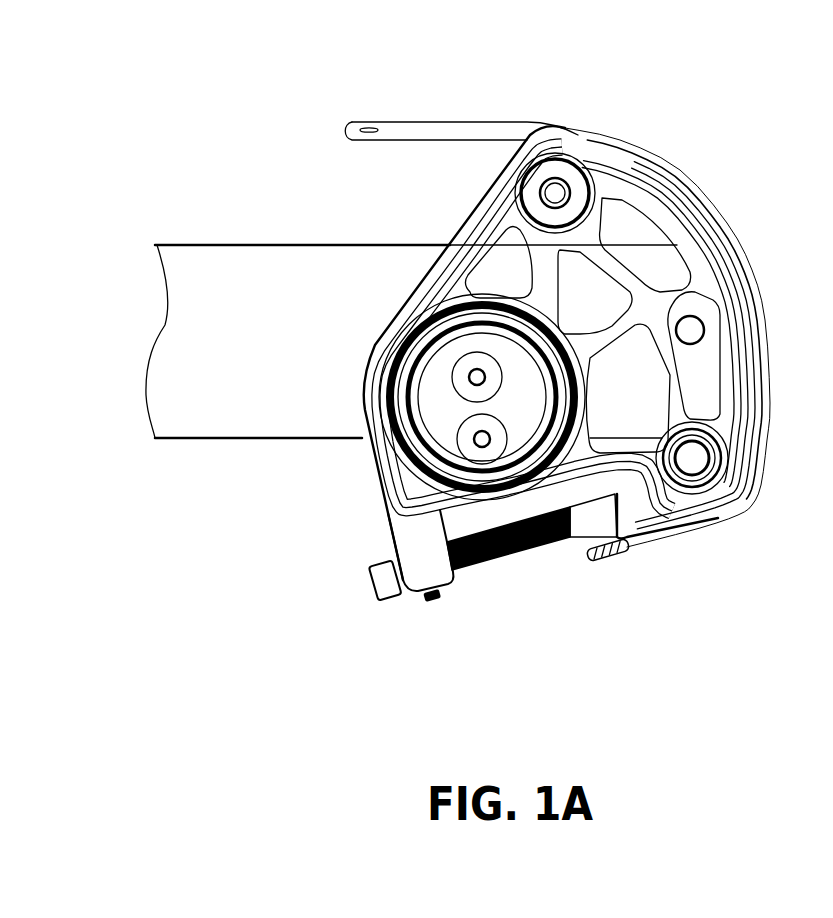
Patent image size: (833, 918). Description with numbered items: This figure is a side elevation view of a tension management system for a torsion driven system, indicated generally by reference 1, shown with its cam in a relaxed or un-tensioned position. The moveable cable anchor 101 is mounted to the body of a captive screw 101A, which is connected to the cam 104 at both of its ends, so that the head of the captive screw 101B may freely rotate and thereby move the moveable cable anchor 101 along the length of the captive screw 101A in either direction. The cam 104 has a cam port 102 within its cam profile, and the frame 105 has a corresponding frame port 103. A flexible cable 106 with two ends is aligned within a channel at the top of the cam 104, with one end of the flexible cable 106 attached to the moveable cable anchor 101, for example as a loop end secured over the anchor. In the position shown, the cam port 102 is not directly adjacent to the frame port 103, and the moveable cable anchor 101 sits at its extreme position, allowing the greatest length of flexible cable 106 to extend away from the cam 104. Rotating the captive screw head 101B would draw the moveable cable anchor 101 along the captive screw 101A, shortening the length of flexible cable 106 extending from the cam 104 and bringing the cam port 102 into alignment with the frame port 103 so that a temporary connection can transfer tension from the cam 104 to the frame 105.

The mounting assembly 1 is at (768, 55).
The moveable cable anchor 101 is at (568, 548).
The captive screw body 101A is at (507, 558).
The captive screw head 101B is at (376, 588).
The cam port 102 is at (693, 460).
The frame port 103 is at (690, 333).
The cam 104 is at (425, 563).
The frame 105 is at (257, 258).
The flexible cable 106 is at (441, 128).